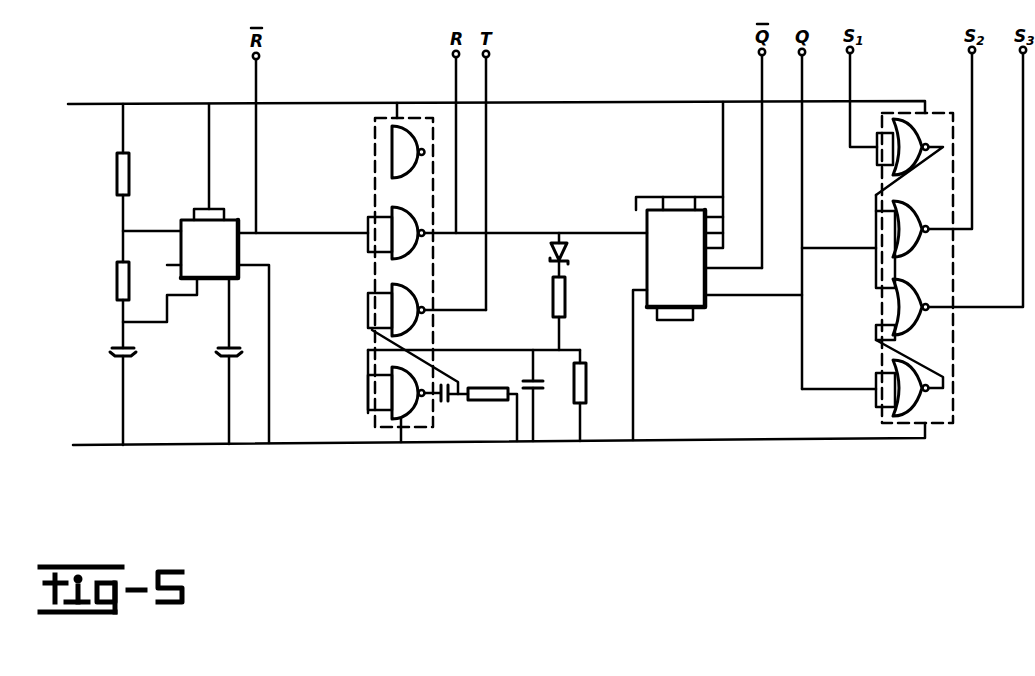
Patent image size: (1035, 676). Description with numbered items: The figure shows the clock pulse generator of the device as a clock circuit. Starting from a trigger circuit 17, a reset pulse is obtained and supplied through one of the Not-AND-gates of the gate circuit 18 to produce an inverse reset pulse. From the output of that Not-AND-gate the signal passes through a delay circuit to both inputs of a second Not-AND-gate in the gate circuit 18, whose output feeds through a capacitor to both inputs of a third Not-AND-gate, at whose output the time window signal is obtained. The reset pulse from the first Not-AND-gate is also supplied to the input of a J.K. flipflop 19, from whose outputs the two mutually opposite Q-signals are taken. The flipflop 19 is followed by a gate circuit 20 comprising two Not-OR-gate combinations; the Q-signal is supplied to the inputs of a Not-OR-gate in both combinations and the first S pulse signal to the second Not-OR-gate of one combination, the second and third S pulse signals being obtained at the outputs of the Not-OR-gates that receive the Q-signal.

The trigger circuit 17 is at (189, 274).
The gate circuit 18 is at (400, 272).
The J.K. flipflop 19 is at (717, 271).
The gate circuit 20 is at (914, 268).